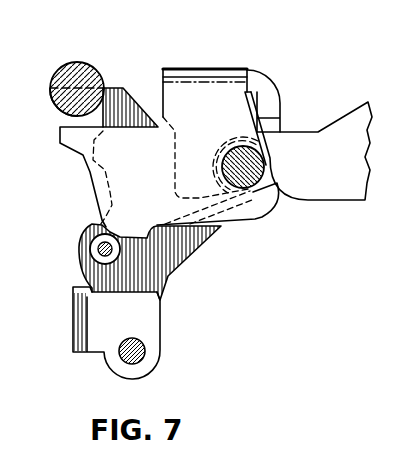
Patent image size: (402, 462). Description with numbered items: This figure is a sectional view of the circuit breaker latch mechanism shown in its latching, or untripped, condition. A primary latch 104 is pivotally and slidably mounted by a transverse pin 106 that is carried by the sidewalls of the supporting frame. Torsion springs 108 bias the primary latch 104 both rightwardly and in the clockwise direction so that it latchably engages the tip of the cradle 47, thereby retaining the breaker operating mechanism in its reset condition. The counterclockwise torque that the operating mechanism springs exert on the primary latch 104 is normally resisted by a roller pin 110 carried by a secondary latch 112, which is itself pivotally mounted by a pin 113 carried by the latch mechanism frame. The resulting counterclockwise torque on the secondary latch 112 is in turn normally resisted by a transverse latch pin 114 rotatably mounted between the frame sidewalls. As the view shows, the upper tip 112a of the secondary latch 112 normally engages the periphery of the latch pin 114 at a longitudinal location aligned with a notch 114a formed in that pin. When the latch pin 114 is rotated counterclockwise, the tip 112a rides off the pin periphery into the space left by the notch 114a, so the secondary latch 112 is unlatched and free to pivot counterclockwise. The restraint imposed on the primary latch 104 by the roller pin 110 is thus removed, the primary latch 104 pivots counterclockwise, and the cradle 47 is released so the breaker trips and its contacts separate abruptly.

The cradle 47 is at (333, 197).
The primary latch 104 is at (221, 118).
The transverse pin 106 is at (247, 193).
The torsion springs 108 is at (270, 162).
The roller pin 110 is at (91, 246).
The secondary latch 112 is at (168, 270).
The upper tip of the secondary latch 112a is at (115, 88).
The pin 113 is at (141, 363).
The transverse latch pin 114 is at (59, 68).
The notch 114a is at (60, 110).